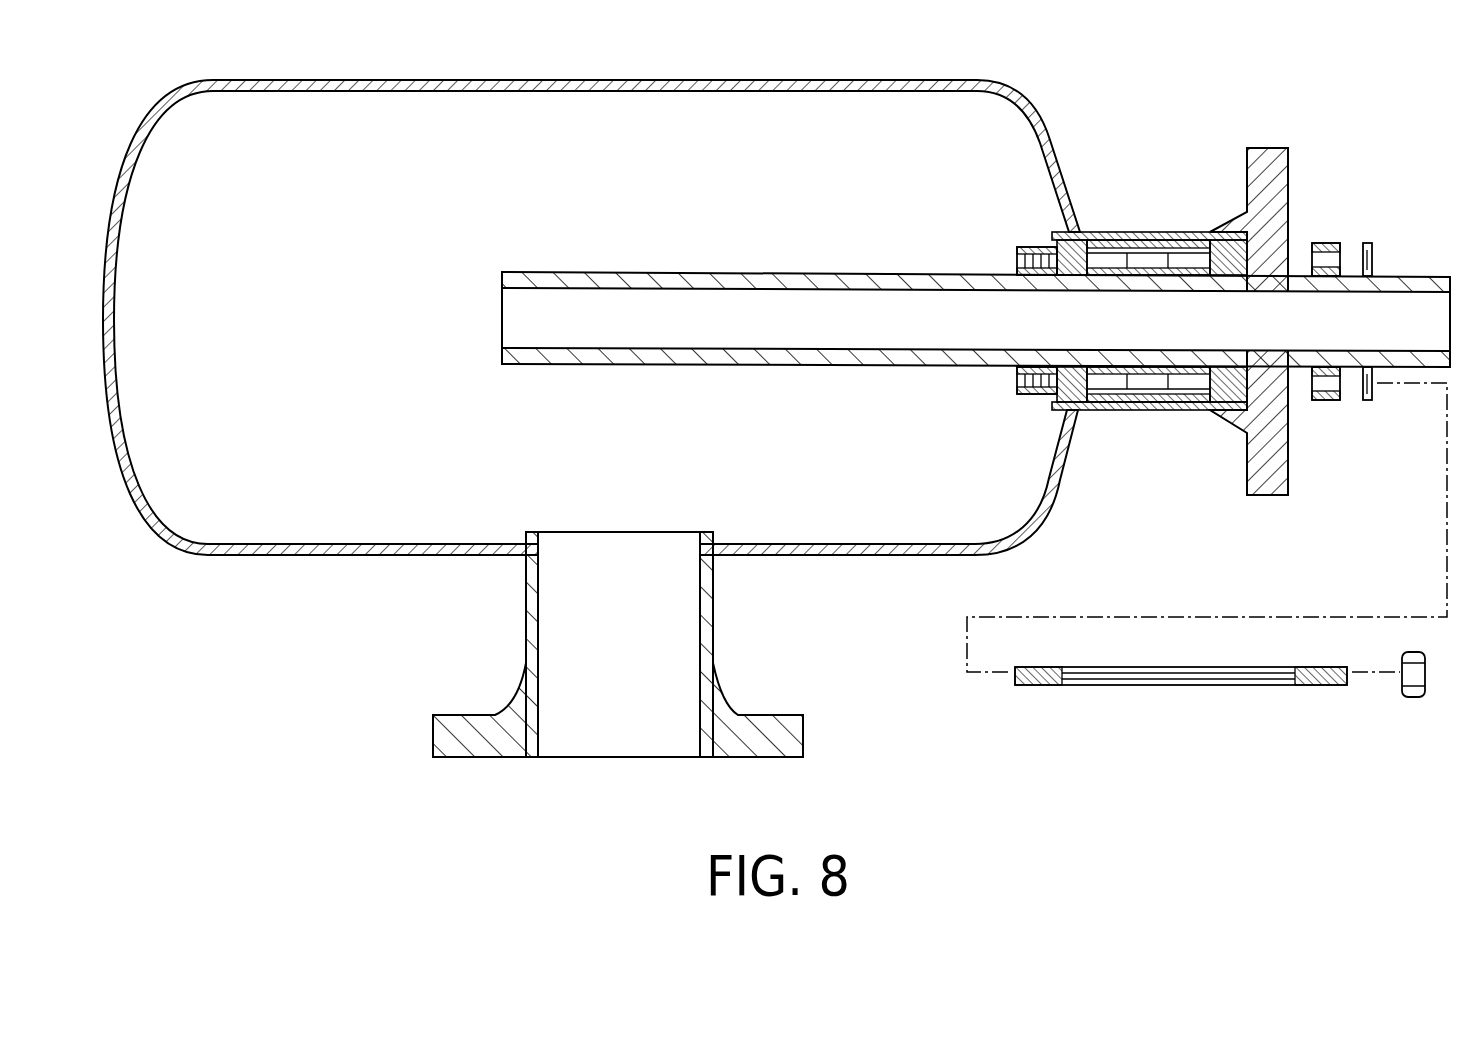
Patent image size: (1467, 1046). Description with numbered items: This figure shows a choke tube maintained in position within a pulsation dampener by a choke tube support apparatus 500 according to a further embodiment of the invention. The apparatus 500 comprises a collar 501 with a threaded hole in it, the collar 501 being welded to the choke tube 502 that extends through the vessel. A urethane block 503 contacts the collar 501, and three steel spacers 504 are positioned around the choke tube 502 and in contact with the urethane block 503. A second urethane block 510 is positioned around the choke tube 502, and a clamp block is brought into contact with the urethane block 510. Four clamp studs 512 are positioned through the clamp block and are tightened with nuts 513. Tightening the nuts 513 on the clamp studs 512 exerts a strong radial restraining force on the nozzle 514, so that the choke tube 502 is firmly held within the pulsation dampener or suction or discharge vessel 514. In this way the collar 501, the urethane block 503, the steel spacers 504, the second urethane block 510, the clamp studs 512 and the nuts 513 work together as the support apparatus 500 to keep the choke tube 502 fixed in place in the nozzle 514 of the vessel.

The choke tube support apparatus 500 is at (1113, 428).
The collar 501 is at (1030, 245).
The choke tube 502 is at (760, 271).
The urethane block 503 is at (1060, 406).
The steel spacers 504 is at (1176, 409).
The second urethane block 510 is at (1285, 432).
The clamp studs 512 is at (1207, 678).
The nuts 513 is at (1413, 698).
The nozzle 514 is at (467, 79).